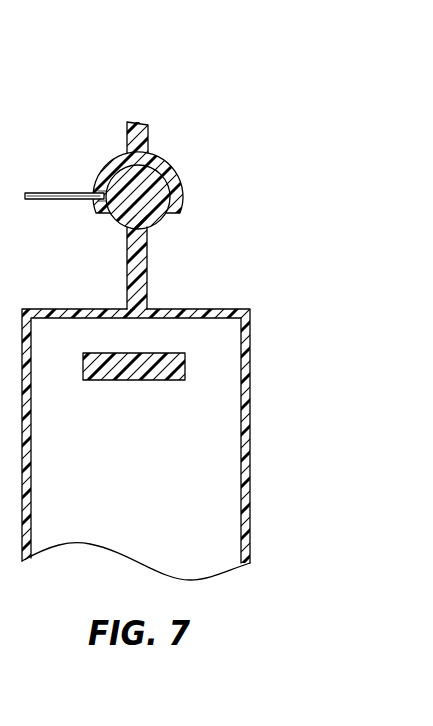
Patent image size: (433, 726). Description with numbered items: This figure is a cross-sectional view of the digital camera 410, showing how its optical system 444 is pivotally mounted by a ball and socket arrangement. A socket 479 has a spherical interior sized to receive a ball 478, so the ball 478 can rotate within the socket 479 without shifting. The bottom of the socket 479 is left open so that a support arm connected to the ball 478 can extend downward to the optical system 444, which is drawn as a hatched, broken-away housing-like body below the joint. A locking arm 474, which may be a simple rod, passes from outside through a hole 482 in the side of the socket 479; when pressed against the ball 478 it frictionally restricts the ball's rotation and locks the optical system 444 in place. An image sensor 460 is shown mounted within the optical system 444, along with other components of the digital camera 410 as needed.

The digital camera 410 is at (201, 88).
The optical system 444 is at (250, 410).
The image sensor 460 is at (185, 356).
The locking arm 474 is at (86, 202).
The ball 478 is at (160, 221).
The socket 479 is at (184, 195).
The hole 482 is at (96, 189).